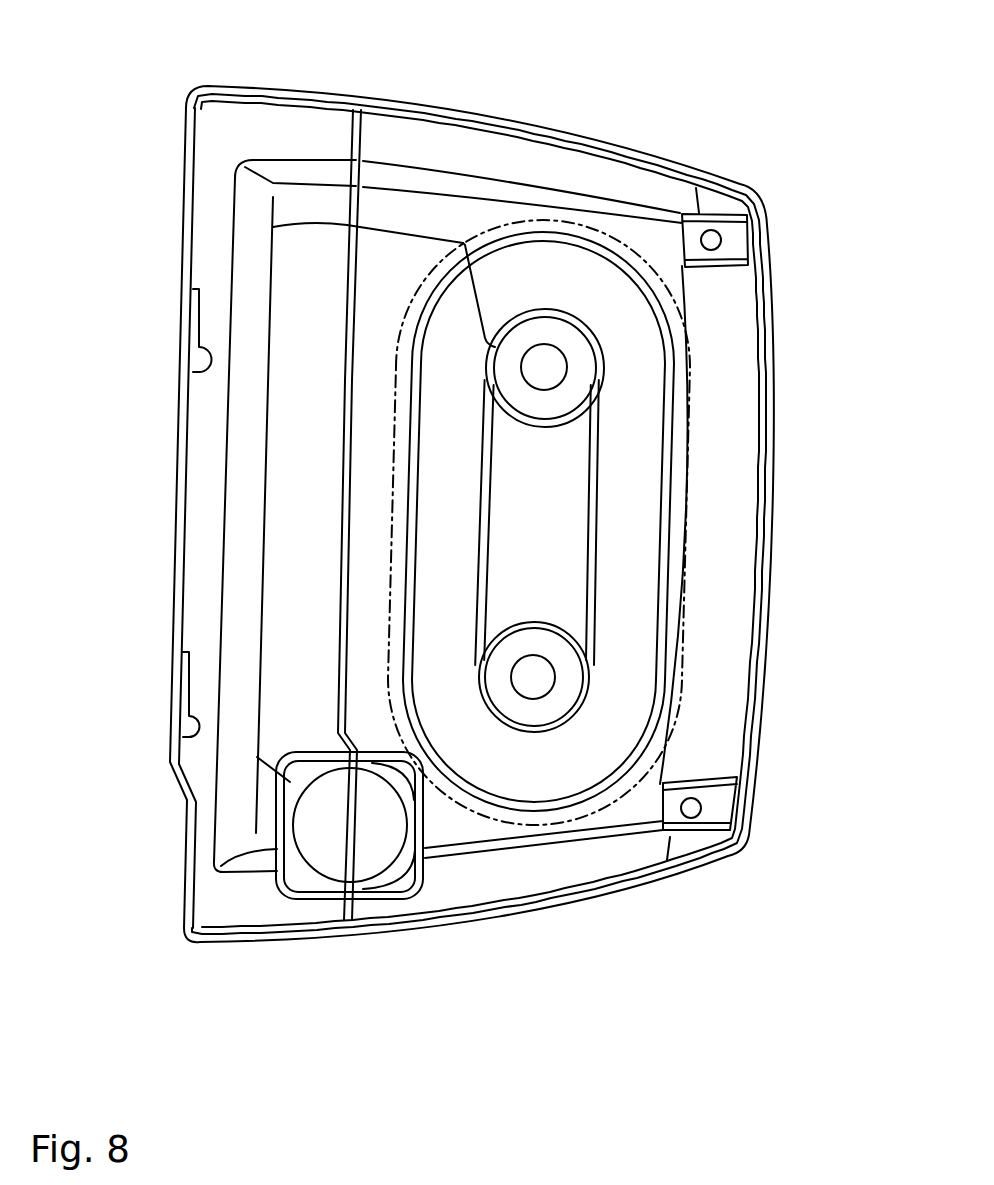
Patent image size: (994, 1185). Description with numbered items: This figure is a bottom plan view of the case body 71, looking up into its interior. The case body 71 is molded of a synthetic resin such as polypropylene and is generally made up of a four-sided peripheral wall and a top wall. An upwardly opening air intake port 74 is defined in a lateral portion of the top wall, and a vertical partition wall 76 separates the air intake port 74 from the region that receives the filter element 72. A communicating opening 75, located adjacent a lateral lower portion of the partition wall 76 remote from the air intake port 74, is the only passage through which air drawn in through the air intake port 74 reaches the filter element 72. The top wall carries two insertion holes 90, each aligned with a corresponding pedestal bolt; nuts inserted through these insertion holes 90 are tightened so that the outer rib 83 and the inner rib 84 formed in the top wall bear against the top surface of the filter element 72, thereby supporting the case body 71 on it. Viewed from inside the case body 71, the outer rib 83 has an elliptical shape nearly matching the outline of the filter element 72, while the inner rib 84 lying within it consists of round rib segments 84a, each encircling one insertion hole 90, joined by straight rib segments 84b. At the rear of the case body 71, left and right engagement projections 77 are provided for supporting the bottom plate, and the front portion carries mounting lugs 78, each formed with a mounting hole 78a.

The case body 71 is at (602, 94).
The filter element 72 is at (690, 475).
The air intake port 74 is at (308, 860).
The communicating opening 75 is at (273, 227).
The vertical partition wall 76 is at (340, 596).
The engagement projections 77 is at (217, 368).
The mounting lugs 78 is at (731, 268).
The mounting hole 78a is at (720, 238).
The outer rib 83 is at (668, 513).
The inner rib 84 is at (700, 522).
The round rib segments 84a is at (598, 610).
The straight rib segments 84b is at (598, 573).
The insertion holes 90 is at (550, 372).